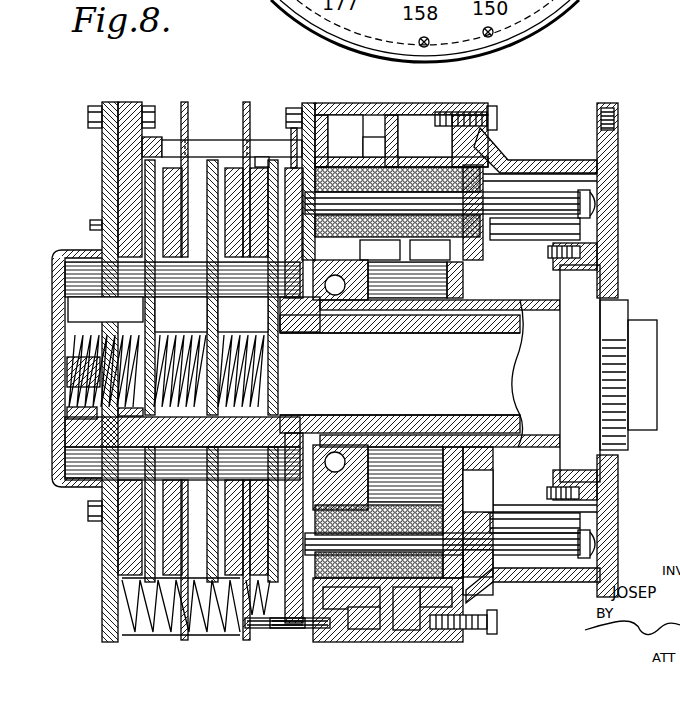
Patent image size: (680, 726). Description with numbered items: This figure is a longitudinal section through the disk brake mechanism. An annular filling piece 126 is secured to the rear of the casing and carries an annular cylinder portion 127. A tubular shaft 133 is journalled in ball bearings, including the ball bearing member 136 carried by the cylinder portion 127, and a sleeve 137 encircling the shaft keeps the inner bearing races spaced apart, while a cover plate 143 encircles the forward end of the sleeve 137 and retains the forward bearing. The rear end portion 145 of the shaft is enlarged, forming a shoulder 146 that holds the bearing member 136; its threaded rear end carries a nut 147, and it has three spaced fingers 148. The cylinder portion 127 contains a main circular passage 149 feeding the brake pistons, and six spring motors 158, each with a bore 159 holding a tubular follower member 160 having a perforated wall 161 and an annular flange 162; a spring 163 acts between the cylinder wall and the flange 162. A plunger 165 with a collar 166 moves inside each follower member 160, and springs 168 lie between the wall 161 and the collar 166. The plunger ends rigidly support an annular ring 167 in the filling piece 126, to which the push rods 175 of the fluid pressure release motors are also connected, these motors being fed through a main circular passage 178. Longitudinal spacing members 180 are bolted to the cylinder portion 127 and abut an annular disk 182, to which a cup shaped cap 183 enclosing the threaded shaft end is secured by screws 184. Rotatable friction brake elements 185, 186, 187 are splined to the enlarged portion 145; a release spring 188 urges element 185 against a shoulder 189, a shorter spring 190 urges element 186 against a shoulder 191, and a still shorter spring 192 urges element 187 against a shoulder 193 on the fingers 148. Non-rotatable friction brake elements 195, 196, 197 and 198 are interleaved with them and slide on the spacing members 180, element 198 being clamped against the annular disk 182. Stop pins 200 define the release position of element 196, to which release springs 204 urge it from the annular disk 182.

The annular filling piece 126 is at (562, 156).
The annular cylinder portion 127 is at (455, 108).
The tubular shaft 133 is at (406, 511).
The ball bearing member 136 is at (372, 414).
The sleeve 137 is at (464, 320).
The cover plate 143 is at (560, 485).
The rear end portion of the tubular shaft 145 is at (322, 414).
The shoulder 146 is at (318, 410).
The nut 147 is at (57, 446).
The fingers 148 is at (88, 226).
The main circular passage 149 is at (406, 641).
The spring motors 158 is at (408, 166).
The bore 159 is at (390, 112).
The tubular follower member 160 is at (344, 138).
The perforated wall 161 is at (488, 516).
The annular flange 162 is at (334, 112).
The spring 163 is at (392, 362).
The plunger 165 is at (513, 205).
The collar 166 is at (348, 208).
The annular ring 167 is at (592, 218).
The springs 168 is at (412, 210).
The push rod or stem 175 is at (518, 240).
The main circular passage 178 is at (362, 641).
The spacing members 180 is at (194, 140).
The annular disk 182 is at (101, 156).
The cup shaped cap 183 is at (57, 330).
The screws 184 is at (88, 512).
The rotatable friction brake element 185 is at (268, 165).
The rotatable friction brake element 186 is at (220, 165).
The rotatable friction brake element 187 is at (168, 168).
The release spring 188 is at (276, 412).
The shoulder 189 is at (283, 332).
The shorter spring 190 is at (196, 340).
The shoulder 191 is at (236, 340).
The still shorter spring 192 is at (104, 336).
The shoulder 193 is at (146, 413).
The non-rotatable friction brake element 195 is at (294, 106).
The non-rotatable friction brake element 196 is at (248, 104).
The non-rotatable friction brake element 197 is at (184, 102).
The non-rotatable friction brake element 198 is at (110, 104).
The stop pins 200 is at (262, 630).
The release springs 204 is at (204, 641).